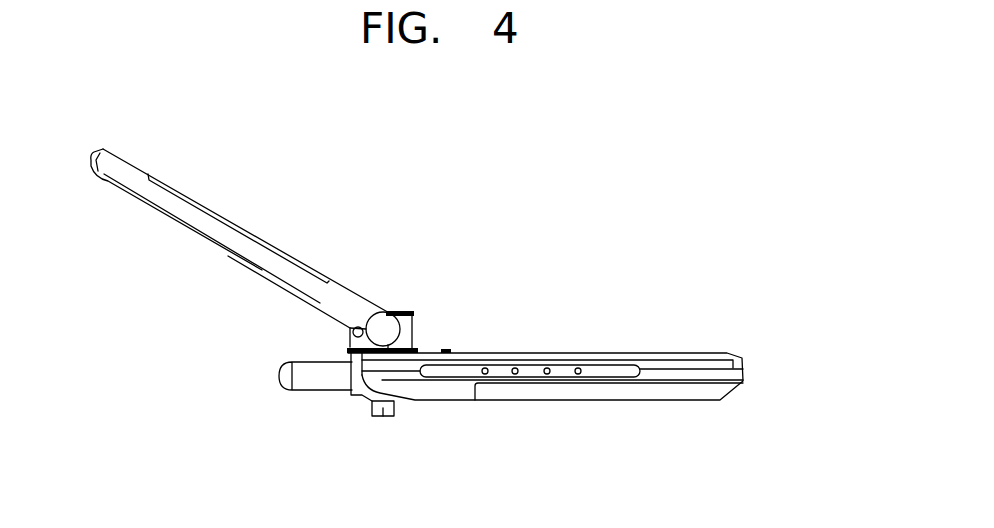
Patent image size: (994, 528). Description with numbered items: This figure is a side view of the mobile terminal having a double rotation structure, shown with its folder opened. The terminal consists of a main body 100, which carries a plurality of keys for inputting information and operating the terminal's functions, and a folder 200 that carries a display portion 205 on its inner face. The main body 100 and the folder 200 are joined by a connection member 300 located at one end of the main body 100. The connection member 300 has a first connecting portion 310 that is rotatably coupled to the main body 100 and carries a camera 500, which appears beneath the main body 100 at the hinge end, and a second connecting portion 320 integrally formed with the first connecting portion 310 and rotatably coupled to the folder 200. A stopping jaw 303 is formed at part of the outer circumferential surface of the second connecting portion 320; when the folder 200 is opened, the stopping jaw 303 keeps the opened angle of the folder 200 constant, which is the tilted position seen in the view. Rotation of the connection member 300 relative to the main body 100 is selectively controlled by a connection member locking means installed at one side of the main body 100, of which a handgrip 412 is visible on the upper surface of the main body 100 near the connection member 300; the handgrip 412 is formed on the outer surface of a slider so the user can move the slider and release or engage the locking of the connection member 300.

The main body 100 is at (511, 369).
The folder 200 is at (241, 237).
The display portion 205 is at (180, 194).
The connection member 300 is at (372, 295).
The stopping jaw 303 is at (350, 343).
The first connecting portion 310 is at (362, 394).
The second connecting portion 320 is at (410, 334).
The handgrip 412 is at (447, 349).
The camera 500 is at (384, 418).